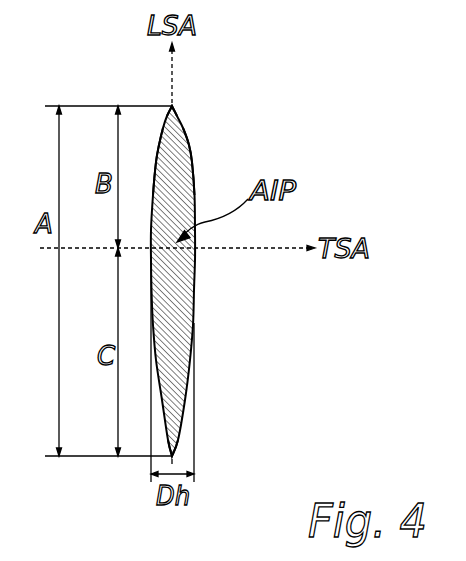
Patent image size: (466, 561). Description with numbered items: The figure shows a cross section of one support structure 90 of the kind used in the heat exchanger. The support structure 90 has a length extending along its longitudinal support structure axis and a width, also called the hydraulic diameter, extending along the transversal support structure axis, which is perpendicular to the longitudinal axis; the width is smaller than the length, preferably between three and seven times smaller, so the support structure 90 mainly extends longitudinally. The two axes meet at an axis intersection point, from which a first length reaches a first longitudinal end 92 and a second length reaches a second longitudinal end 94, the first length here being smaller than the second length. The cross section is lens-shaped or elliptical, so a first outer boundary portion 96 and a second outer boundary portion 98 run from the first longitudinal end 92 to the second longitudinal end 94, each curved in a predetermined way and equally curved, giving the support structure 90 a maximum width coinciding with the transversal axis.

The support structure 90 is at (220, 357).
The first longitudinal end 92 is at (158, 96).
The second longitudinal end 94 is at (179, 459).
The first outer boundary portion 96 is at (157, 152).
The second outer boundary portion 98 is at (190, 159).